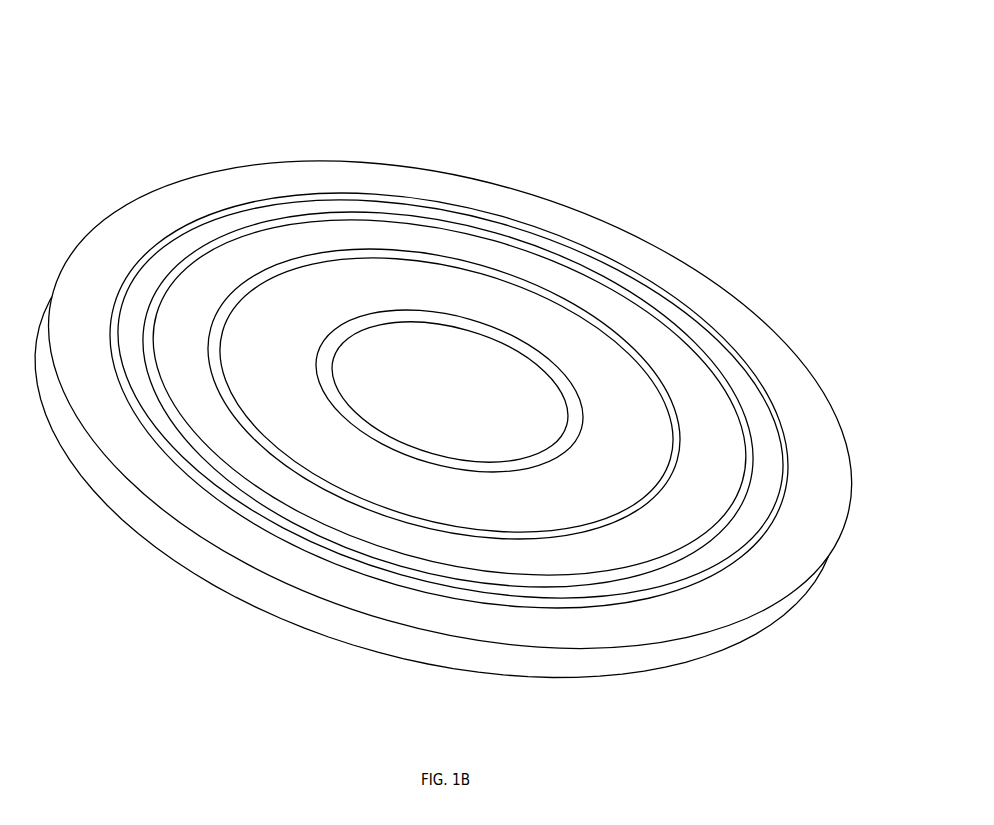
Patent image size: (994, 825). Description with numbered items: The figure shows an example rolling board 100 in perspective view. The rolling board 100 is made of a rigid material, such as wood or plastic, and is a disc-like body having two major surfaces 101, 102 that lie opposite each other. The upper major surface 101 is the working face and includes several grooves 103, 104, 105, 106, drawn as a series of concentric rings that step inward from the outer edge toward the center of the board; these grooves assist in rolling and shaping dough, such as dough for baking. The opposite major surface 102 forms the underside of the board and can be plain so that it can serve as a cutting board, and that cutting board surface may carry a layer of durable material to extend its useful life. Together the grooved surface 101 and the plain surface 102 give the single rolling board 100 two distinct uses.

The rolling board 100 is at (538, 49).
The major surface 101 is at (230, 183).
The major surface 102 is at (173, 603).
The groove 103 is at (272, 203).
The groove 104 is at (164, 286).
The groove 105 is at (382, 258).
The groove 106 is at (503, 471).